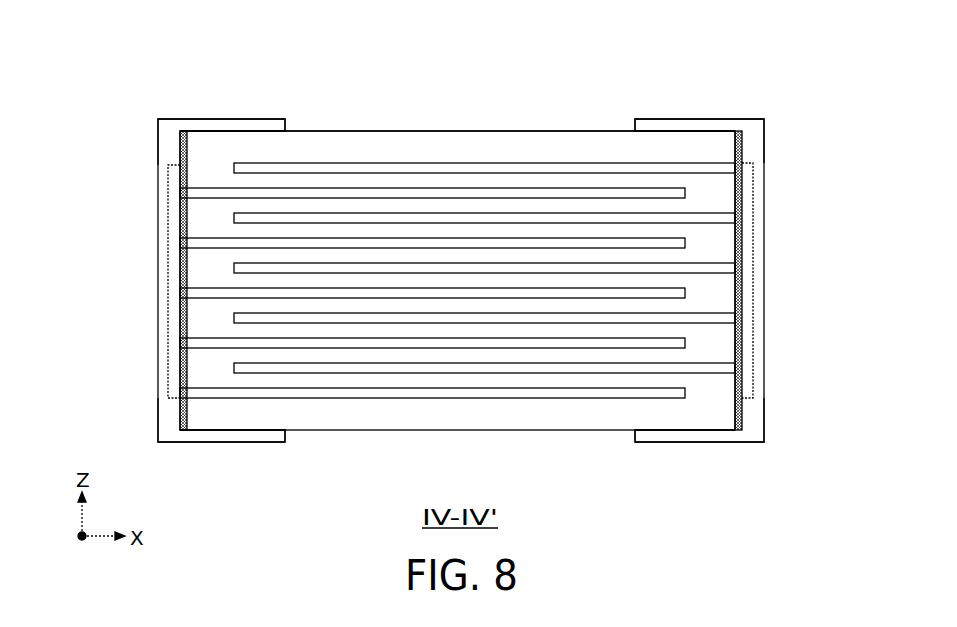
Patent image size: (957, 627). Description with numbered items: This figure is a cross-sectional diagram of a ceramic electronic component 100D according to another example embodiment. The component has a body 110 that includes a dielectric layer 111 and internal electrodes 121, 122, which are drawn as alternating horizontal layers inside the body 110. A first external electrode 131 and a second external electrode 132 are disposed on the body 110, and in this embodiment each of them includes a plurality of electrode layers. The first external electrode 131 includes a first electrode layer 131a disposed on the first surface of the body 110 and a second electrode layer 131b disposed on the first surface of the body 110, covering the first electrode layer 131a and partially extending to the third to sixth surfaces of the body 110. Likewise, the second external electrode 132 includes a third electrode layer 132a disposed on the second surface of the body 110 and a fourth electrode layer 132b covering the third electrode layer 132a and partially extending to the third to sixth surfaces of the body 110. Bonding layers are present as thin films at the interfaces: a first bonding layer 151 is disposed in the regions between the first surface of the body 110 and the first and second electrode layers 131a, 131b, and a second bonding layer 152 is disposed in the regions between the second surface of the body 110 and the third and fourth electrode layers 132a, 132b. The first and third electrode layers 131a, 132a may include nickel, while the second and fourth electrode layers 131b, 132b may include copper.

The ceramic electronic component 100D is at (461, 257).
The body 110 is at (523, 131).
The dielectric layer 111 is at (373, 131).
The internal electrode 121 is at (353, 398).
The internal electrode 122 is at (562, 374).
The first external electrode 131 is at (161, 281).
The first electrode layer 131a is at (180, 347).
The second electrode layer 131b is at (166, 375).
The second external electrode 132 is at (760, 281).
The third electrode layer 132a is at (742, 348).
The fourth electrode layer 132b is at (755, 375).
The first bonding layer 151 is at (182, 306).
The second bonding layer 152 is at (740, 306).